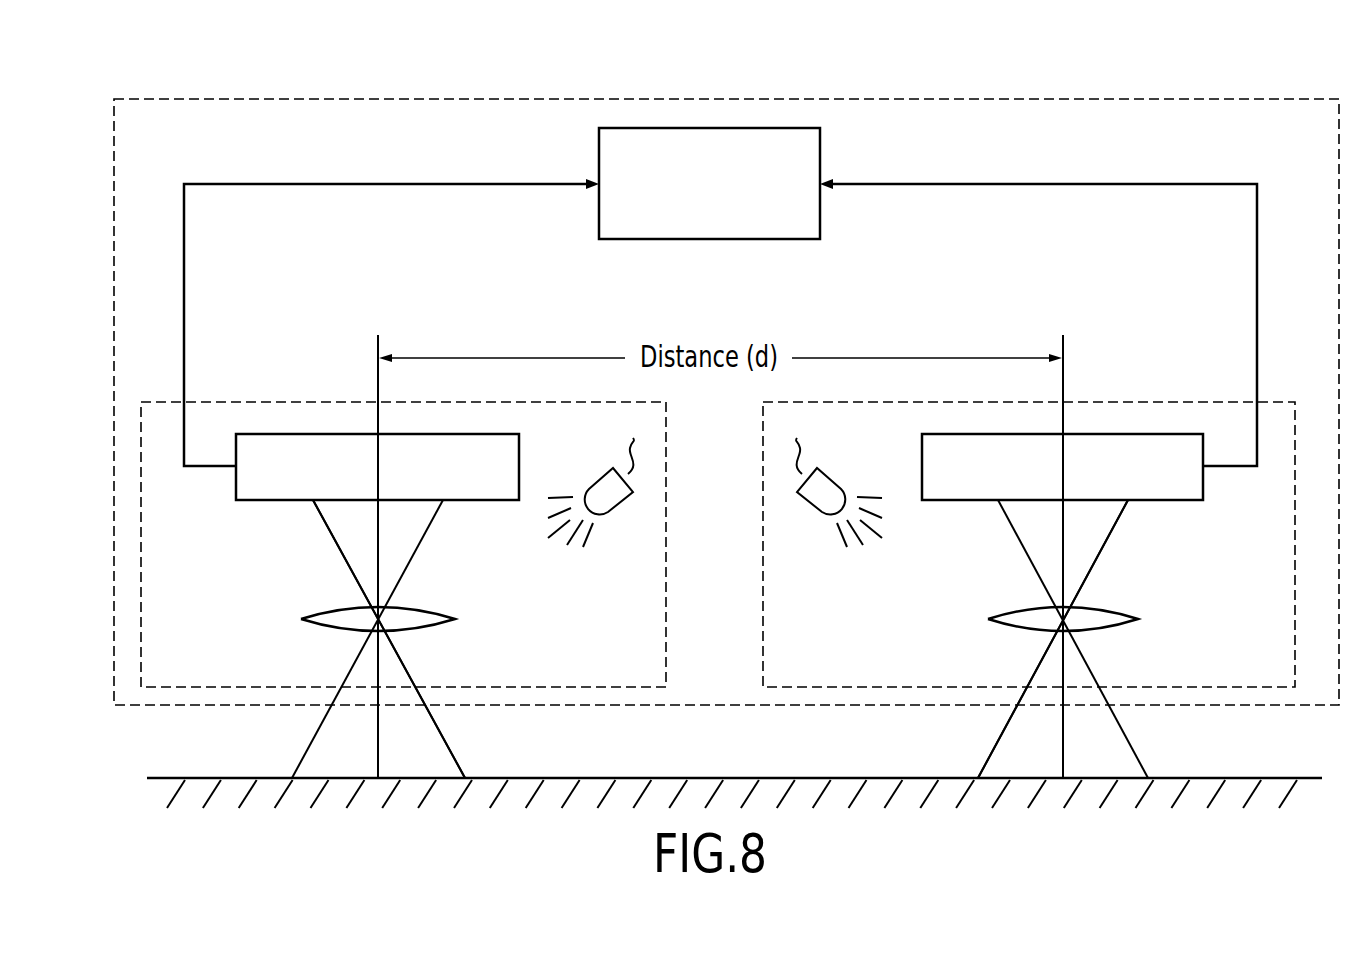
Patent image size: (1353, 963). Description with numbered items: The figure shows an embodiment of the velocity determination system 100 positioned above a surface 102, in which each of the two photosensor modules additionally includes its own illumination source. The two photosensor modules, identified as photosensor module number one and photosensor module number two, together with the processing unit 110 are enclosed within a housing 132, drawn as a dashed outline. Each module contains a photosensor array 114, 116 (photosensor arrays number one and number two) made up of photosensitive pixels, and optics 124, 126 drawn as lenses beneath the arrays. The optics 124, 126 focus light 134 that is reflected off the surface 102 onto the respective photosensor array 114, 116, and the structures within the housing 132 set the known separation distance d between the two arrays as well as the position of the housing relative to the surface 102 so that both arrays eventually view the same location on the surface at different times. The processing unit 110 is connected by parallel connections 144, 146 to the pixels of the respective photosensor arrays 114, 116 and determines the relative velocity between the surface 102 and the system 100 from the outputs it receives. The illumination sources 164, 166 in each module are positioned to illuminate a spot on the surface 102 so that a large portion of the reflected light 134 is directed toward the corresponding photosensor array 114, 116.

The velocity determination system 100 is at (728, 369).
The surface 102 is at (1277, 768).
The processing unit 110 is at (733, 222).
The photosensor array 114 is at (280, 402).
The photosensor array 116 is at (1151, 402).
The optics 124 is at (437, 612).
The optics 126 is at (1122, 612).
The housing 132 is at (258, 99).
The light 134 is at (310, 742).
The parallel connection 144 is at (184, 242).
The parallel connection 146 is at (1257, 243).
The illumination source 164 is at (618, 505).
The illumination source 166 is at (812, 505).